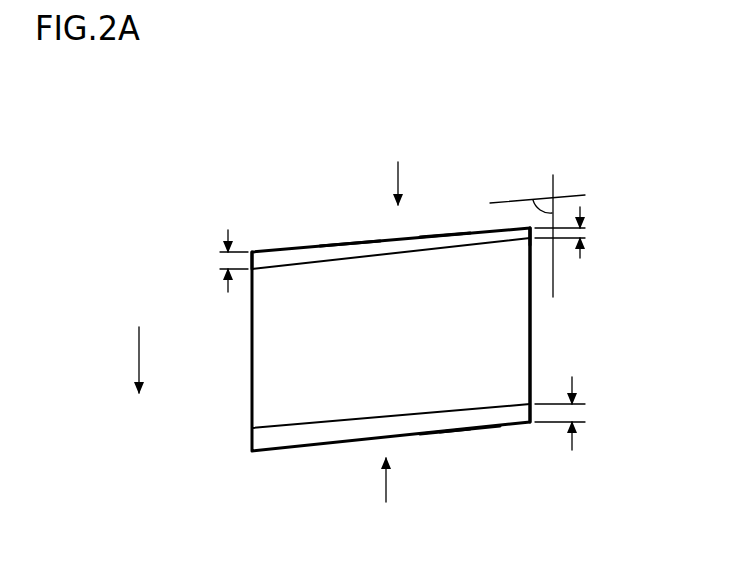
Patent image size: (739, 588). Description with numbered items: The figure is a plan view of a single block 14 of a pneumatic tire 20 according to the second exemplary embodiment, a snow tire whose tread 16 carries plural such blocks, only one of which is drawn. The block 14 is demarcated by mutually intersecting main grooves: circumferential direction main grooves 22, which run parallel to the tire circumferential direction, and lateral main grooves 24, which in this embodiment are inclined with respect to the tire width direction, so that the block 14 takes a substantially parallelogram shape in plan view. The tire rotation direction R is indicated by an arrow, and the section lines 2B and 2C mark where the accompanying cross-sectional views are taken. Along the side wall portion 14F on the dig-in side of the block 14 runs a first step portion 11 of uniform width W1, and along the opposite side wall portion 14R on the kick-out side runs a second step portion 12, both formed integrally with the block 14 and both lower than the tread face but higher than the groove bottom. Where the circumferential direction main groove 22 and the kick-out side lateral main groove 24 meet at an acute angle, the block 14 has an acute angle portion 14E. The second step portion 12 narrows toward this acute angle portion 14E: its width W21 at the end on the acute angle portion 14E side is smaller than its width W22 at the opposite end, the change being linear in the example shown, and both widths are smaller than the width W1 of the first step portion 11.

The pneumatic tire 20 is at (292, 146).
The tread 16 is at (271, 209).
The second step portion 12 is at (310, 247).
The first step portion 11 is at (311, 437).
The block 14 is at (533, 332).
The side wall portion 14R is at (343, 243).
The acute angle portion 14E is at (524, 244).
The side wall portion 14F is at (474, 429).
The lateral main groove 24 is at (444, 226).
The circumferential direction main groove 22 is at (217, 367).
The width of one end of the second step portion W21 is at (586, 232).
The width of other end of the second step portion W22 is at (206, 261).
The width of the first step portion W1 is at (580, 413).
The section line 2B is at (398, 168).
The section line 2C is at (383, 497).
The tire rotation direction R is at (139, 378).